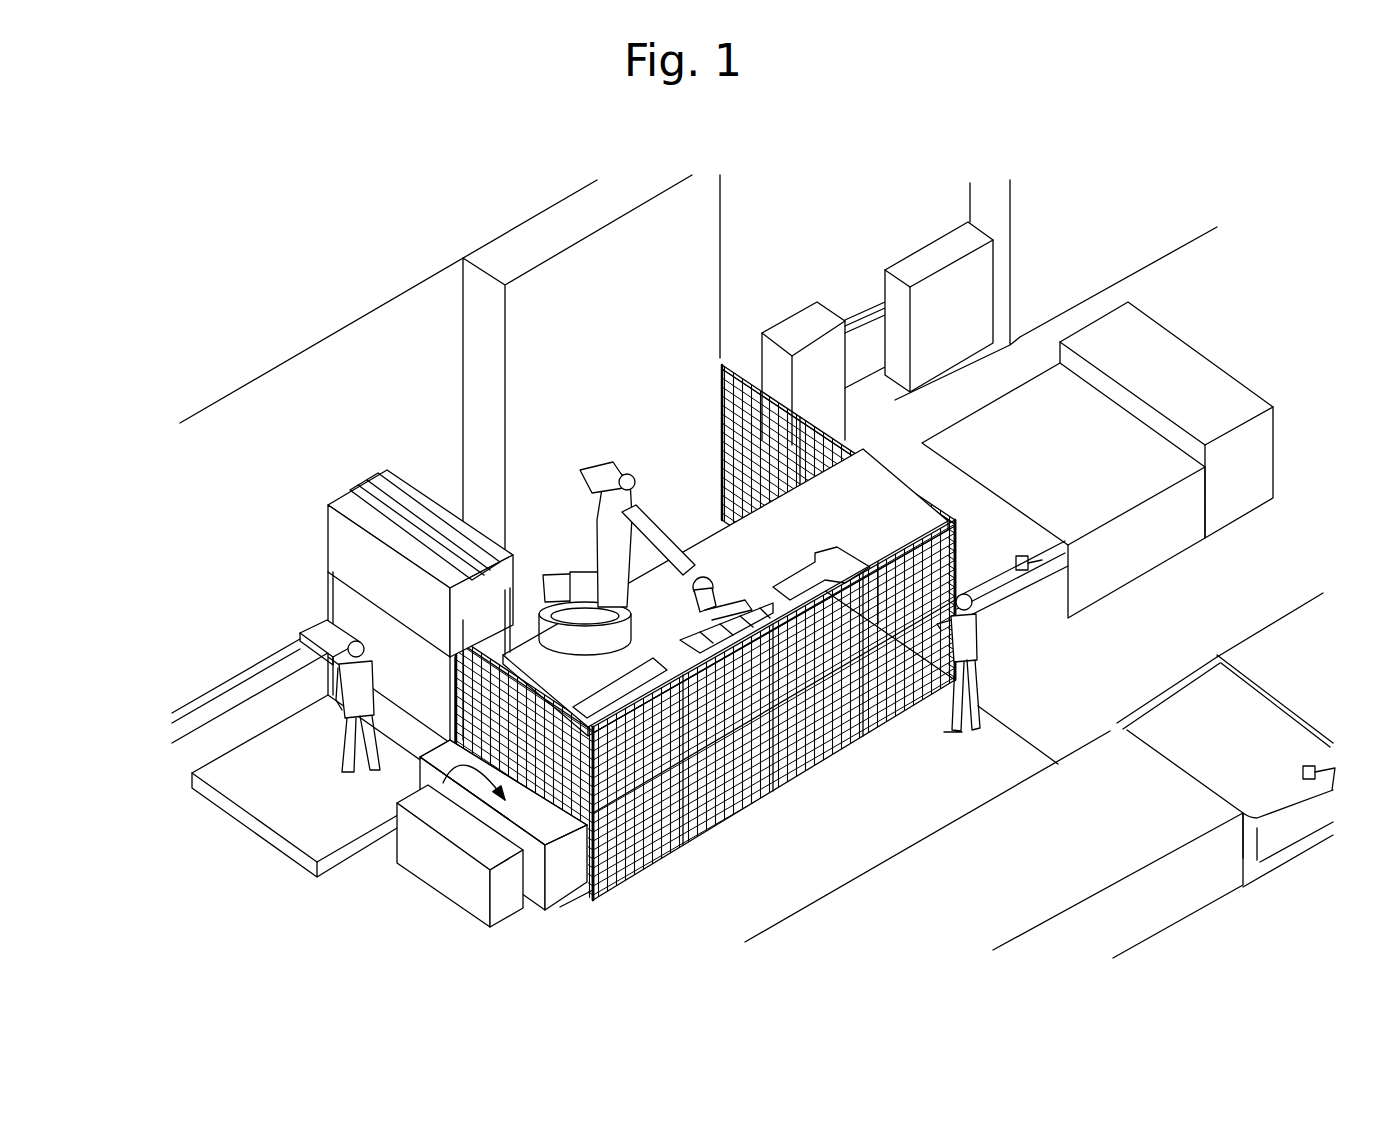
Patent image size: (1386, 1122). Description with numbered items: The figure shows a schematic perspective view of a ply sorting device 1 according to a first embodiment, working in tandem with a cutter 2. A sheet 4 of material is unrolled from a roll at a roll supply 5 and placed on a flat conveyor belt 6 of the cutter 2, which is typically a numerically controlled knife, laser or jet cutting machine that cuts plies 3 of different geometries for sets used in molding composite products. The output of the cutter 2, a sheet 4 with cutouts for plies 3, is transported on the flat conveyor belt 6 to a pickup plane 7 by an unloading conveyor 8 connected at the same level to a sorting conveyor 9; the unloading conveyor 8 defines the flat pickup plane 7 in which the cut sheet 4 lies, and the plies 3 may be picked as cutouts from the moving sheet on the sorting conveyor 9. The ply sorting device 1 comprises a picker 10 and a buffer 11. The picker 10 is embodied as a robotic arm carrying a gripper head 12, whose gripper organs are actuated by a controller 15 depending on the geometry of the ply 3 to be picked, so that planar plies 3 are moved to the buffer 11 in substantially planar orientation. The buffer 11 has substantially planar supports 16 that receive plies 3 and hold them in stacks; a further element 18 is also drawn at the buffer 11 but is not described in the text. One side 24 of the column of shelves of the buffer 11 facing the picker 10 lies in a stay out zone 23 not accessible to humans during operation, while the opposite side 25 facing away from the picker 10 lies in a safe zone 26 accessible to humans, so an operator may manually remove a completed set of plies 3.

The ply sorting device 1 is at (1262, 328).
The cutter 2 is at (1058, 465).
The plies 3 is at (637, 683).
The sheet 4 is at (635, 747).
The roll supply 5 is at (1163, 388).
The flat conveyor belt 6 is at (995, 573).
The pickup plane 7 is at (443, 773).
The unloading conveyor 8 is at (979, 545).
The sorting conveyor 9 is at (529, 827).
The picker 10 is at (587, 577).
The buffer 11 is at (379, 477).
The gripper head 12 is at (750, 603).
The controller 15 is at (807, 327).
The substantially planar supports 16 is at (325, 632).
The gate housing 18 is at (329, 504).
The stay out zone 23 is at (645, 605).
The side of the column of shelves facing the picker 24 is at (448, 495).
The opposite side of the column 25 is at (295, 682).
The safe zone 26 is at (278, 795).